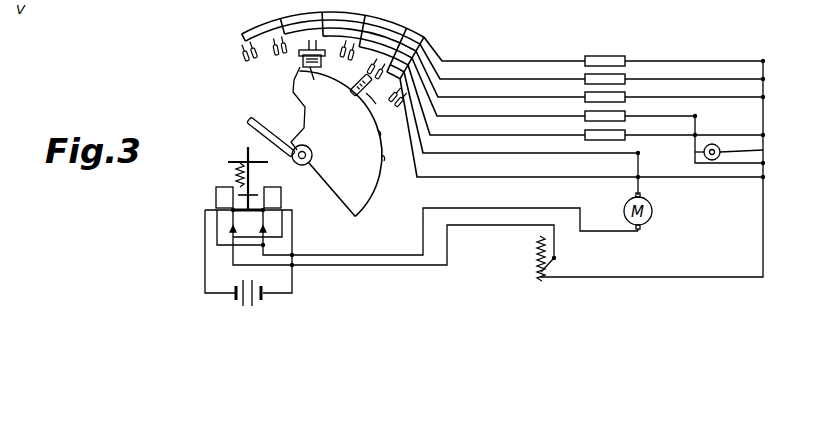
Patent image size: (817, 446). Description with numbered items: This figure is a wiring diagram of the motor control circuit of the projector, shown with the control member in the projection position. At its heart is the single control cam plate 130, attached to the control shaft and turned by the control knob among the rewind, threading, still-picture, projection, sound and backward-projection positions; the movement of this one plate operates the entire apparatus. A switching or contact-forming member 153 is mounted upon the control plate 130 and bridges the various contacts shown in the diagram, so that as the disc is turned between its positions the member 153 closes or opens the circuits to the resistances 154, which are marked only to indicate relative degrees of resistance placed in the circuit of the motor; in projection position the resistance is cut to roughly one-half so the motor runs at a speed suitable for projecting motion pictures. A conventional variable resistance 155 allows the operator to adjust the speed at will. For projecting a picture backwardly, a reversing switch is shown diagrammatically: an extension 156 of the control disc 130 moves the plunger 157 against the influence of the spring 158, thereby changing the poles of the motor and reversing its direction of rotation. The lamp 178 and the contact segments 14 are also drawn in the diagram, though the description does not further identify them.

The contact segment bars and wiring 14 is at (212, 0).
The control cam plate 130 is at (376, 192).
The switching member 153 is at (292, 84).
The resistances 154 is at (640, 135).
The variable resistance 155 is at (530, 274).
The extension of the control disc 156 is at (250, 123).
The plunger 157 is at (246, 150).
The spring 158 is at (236, 171).
The lamp 178 is at (764, 152).